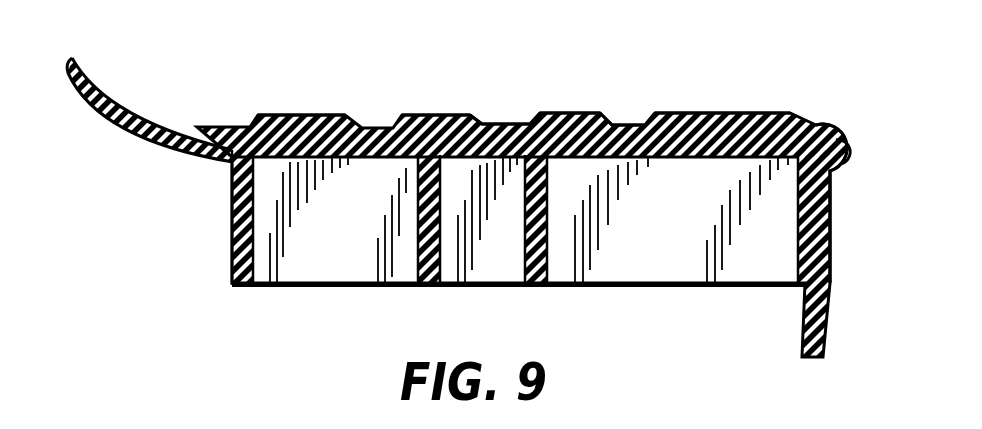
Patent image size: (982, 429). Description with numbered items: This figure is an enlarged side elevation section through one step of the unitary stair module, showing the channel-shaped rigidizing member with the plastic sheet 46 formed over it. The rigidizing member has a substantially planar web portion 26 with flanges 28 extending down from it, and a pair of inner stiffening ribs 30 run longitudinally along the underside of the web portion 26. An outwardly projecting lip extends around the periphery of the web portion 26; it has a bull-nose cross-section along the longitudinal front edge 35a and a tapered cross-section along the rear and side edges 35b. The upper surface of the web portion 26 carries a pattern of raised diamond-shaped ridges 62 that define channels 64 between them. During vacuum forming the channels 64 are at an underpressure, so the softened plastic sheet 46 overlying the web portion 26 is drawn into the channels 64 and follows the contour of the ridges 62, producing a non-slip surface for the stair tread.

The web portion 26 is at (442, 115).
The flanges 28 is at (240, 212).
The inner stiffening ribs 30 is at (534, 252).
The longitudinal front edge 35a is at (812, 150).
The rear and side edges 35b is at (232, 148).
The plastic sheet 46 is at (543, 112).
The raised diamond-shaped ridges 62 is at (317, 135).
The channels 64 is at (640, 124).